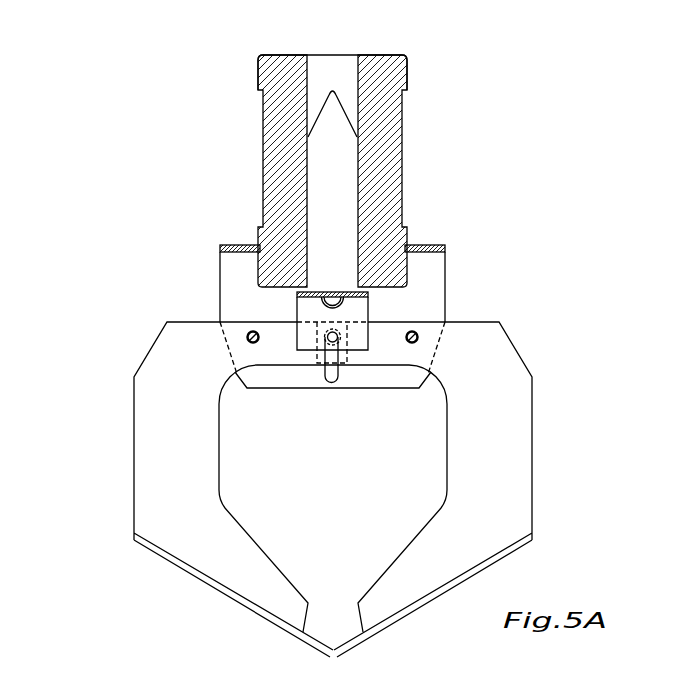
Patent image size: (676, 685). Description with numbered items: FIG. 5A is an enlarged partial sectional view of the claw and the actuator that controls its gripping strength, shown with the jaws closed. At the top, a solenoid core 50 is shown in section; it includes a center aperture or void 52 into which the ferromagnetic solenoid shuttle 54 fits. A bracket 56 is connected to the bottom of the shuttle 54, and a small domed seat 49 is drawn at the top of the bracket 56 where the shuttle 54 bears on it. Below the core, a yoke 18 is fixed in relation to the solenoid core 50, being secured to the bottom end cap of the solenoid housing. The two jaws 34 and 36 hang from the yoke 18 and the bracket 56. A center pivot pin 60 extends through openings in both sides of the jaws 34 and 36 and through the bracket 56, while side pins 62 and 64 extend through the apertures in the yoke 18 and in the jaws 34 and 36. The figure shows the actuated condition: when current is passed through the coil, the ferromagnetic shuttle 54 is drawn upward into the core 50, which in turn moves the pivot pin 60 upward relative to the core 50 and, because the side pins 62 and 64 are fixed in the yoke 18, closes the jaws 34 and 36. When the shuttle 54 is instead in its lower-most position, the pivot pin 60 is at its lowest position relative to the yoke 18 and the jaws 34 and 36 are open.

The yoke 18 is at (223, 277).
The jaw 34 is at (140, 437).
The jaw 36 is at (521, 462).
The dome seat 49 is at (330, 292).
The solenoid core 50 is at (387, 163).
The center aperture 52 is at (306, 77).
The solenoid shuttle 54 is at (322, 108).
The bracket 56 is at (362, 312).
The center pivot pin 60 is at (333, 350).
The side pin 62 is at (247, 337).
The side pin 64 is at (418, 337).